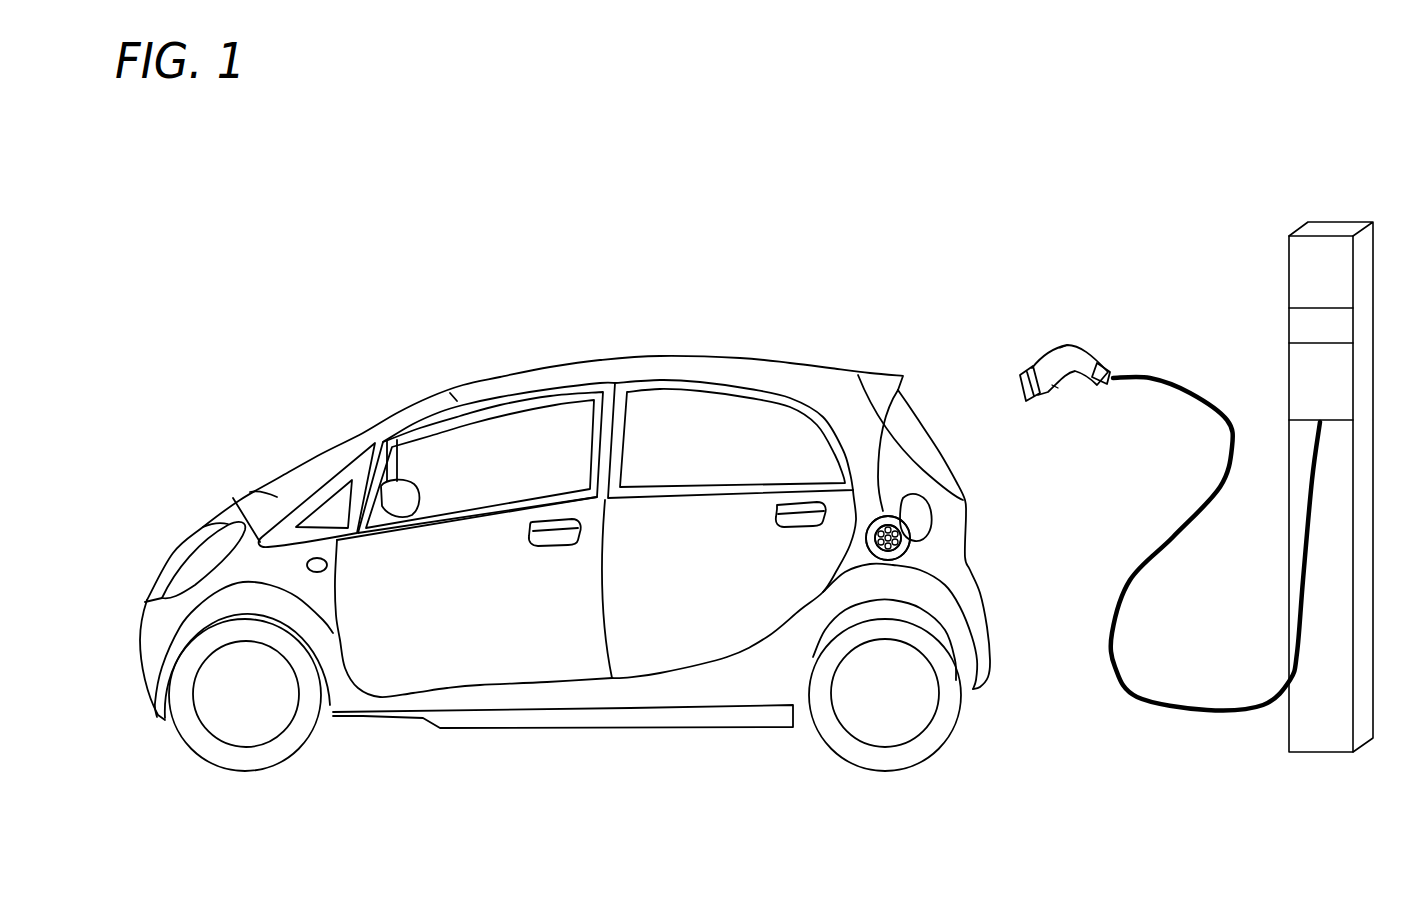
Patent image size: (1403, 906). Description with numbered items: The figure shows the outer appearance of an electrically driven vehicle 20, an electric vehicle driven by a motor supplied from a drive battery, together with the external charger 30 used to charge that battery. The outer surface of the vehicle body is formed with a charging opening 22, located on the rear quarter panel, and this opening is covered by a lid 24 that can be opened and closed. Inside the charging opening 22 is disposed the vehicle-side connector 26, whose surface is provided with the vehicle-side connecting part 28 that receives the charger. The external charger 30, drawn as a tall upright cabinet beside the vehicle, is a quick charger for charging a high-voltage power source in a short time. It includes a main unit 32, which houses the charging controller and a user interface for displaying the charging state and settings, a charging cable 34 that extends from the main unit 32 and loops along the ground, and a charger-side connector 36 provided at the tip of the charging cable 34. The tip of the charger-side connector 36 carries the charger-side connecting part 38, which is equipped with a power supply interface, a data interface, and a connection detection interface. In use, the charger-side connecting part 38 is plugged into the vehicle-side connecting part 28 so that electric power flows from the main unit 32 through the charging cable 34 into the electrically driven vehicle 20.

The electrically driven vehicle 20 is at (494, 372).
The charging opening 22 is at (907, 549).
The lid 24 is at (927, 524).
The vehicle-side connector 26 is at (900, 516).
The vehicle-side connecting part 28 is at (890, 512).
The external charger 30 is at (1169, 466).
The main unit 32 is at (1307, 712).
The charging cable 34 is at (1189, 704).
The charger-side connector 36 is at (1088, 380).
The charger-side connecting part 38 is at (1017, 386).